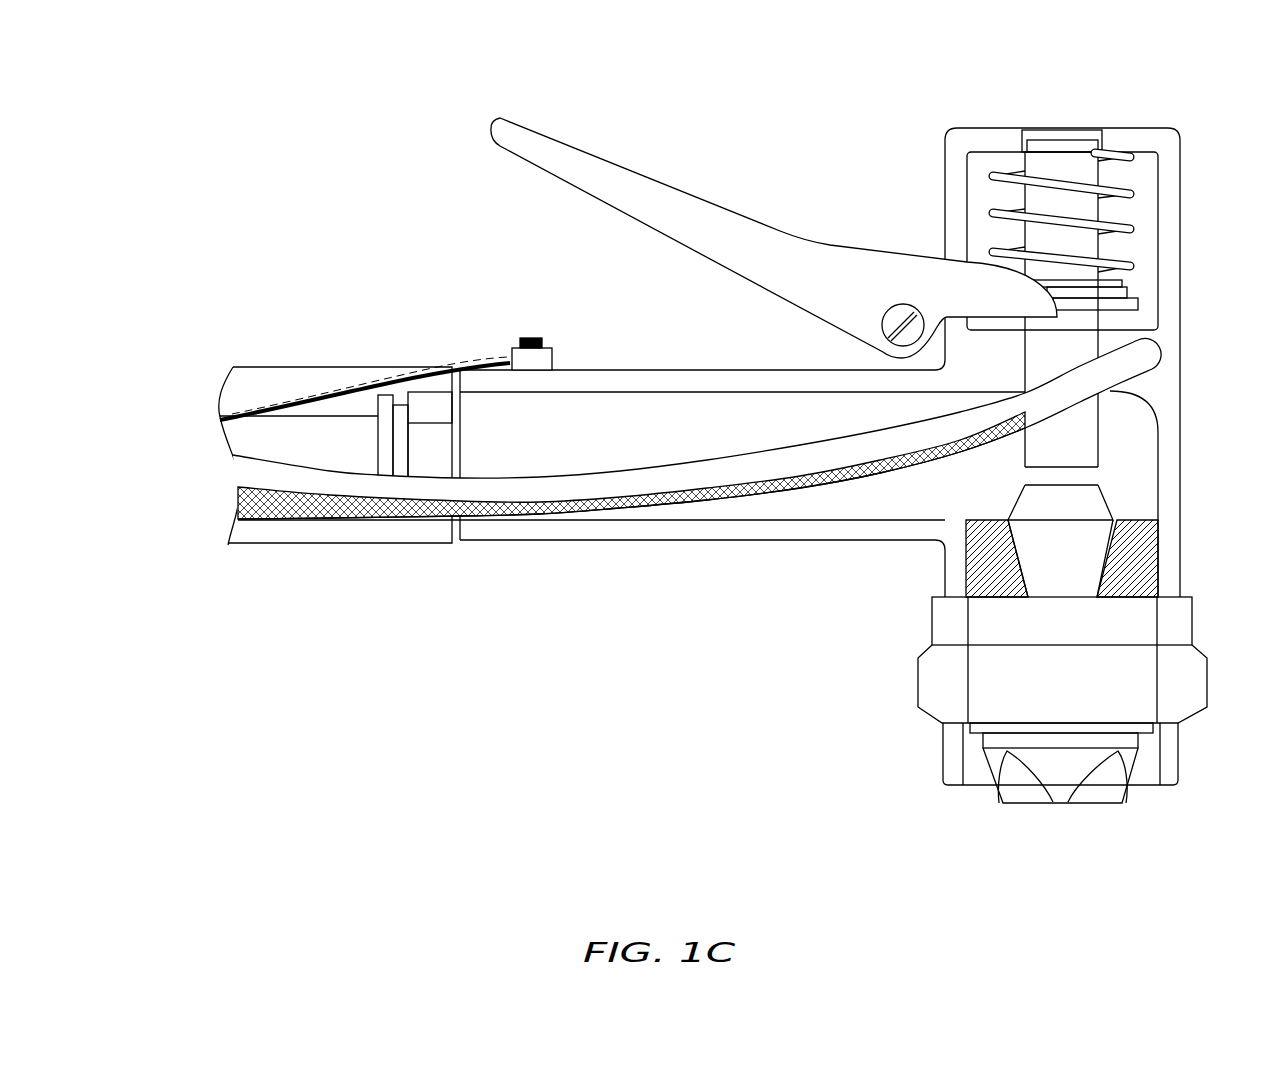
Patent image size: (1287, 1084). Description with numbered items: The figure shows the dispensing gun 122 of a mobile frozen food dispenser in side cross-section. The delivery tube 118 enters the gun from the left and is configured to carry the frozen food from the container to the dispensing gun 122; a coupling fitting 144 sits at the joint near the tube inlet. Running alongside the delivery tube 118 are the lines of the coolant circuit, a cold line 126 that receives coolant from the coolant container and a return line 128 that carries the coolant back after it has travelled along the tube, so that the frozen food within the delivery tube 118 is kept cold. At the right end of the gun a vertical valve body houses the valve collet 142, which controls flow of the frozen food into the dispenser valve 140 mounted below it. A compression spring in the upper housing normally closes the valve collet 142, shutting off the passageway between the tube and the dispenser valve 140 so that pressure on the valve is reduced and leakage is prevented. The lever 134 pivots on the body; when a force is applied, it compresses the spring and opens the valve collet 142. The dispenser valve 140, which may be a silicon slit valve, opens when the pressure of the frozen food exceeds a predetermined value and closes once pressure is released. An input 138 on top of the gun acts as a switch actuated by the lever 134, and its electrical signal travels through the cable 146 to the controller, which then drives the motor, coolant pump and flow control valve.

The delivery tube 118 is at (248, 430).
The dispensing gun 122 is at (318, 158).
The cold line 126 is at (593, 485).
The return line 128 is at (817, 487).
The lever 134 is at (529, 114).
The input 138 is at (527, 333).
The dispenser valve 140 is at (1027, 811).
The valve collet 142 is at (1113, 493).
The coupling fitting 144 is at (408, 455).
The cable 146 is at (358, 378).